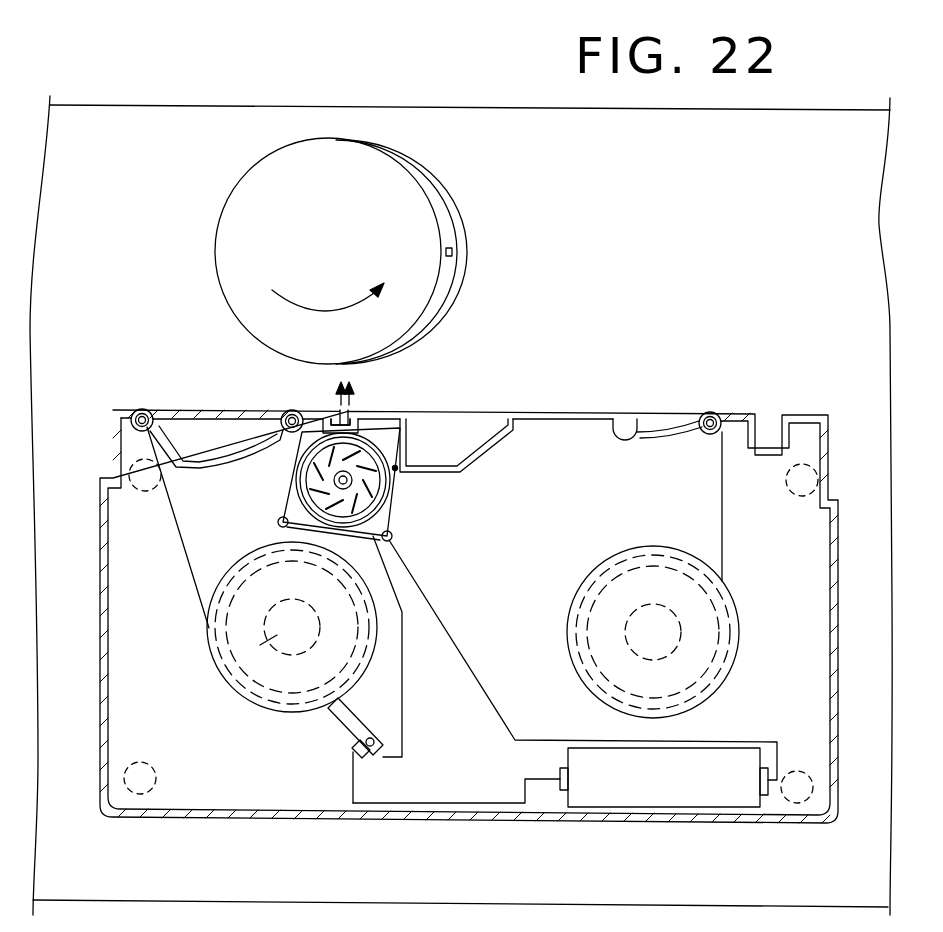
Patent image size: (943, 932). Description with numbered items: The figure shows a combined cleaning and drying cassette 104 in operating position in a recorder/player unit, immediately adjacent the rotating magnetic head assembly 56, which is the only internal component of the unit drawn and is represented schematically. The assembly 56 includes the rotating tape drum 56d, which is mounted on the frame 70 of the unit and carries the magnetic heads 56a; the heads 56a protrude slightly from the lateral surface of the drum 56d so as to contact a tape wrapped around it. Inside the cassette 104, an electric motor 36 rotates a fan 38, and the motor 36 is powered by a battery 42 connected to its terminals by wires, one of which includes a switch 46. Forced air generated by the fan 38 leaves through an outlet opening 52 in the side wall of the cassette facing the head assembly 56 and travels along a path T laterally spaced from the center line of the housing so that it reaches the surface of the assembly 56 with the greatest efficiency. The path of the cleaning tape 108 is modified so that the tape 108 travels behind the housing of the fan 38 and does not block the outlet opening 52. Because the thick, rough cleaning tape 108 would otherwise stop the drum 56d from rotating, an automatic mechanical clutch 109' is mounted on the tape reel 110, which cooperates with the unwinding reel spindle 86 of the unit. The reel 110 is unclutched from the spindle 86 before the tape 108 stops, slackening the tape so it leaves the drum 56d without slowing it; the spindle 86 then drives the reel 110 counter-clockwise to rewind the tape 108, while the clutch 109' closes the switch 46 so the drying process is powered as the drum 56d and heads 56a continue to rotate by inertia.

The frame 70 is at (181, 130).
The rotating magnetic head assembly 56 is at (433, 148).
The rotating tape drum 56d is at (418, 216).
The magnetic heads 56a is at (453, 253).
The combined cleaning and drying cassette 104 is at (754, 388).
The cleaning tape 108 is at (210, 405).
The path of forced air T is at (332, 410).
The outlet opening 52 is at (348, 422).
The electric motor 36 is at (386, 503).
The fan 38 is at (397, 467).
The tape reel 110 is at (228, 684).
The automatic mechanical clutch 109' is at (269, 675).
The unwinding reel spindle 86 is at (216, 652).
The switch 46 is at (352, 720).
The battery 42 is at (633, 794).